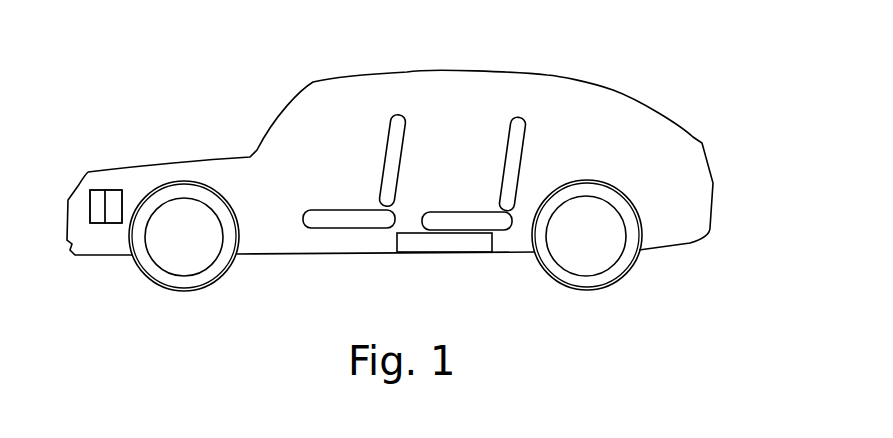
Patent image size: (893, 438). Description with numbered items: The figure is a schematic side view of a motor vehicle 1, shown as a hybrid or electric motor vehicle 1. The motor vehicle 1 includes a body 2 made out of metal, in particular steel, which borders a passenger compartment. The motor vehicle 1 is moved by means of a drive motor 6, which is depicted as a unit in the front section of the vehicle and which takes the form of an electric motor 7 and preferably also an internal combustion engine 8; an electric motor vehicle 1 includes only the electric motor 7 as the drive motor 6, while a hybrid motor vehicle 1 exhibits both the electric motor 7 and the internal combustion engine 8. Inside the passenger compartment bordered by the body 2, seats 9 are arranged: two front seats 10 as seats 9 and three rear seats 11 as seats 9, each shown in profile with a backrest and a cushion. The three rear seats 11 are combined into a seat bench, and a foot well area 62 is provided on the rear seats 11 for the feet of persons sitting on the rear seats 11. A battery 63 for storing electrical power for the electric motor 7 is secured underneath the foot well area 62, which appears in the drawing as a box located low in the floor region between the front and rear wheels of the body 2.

The motor vehicle 1 is at (683, 279).
The body 2 is at (658, 108).
The drive motor 6 is at (116, 161).
The electric motor 7 is at (100, 190).
The internal combustion engine 8 is at (115, 190).
The seats 9 is at (449, 121).
The front seats 10 is at (397, 110).
The rear seats 11 is at (515, 112).
The foot well area 62 is at (383, 243).
The battery 63 is at (450, 243).